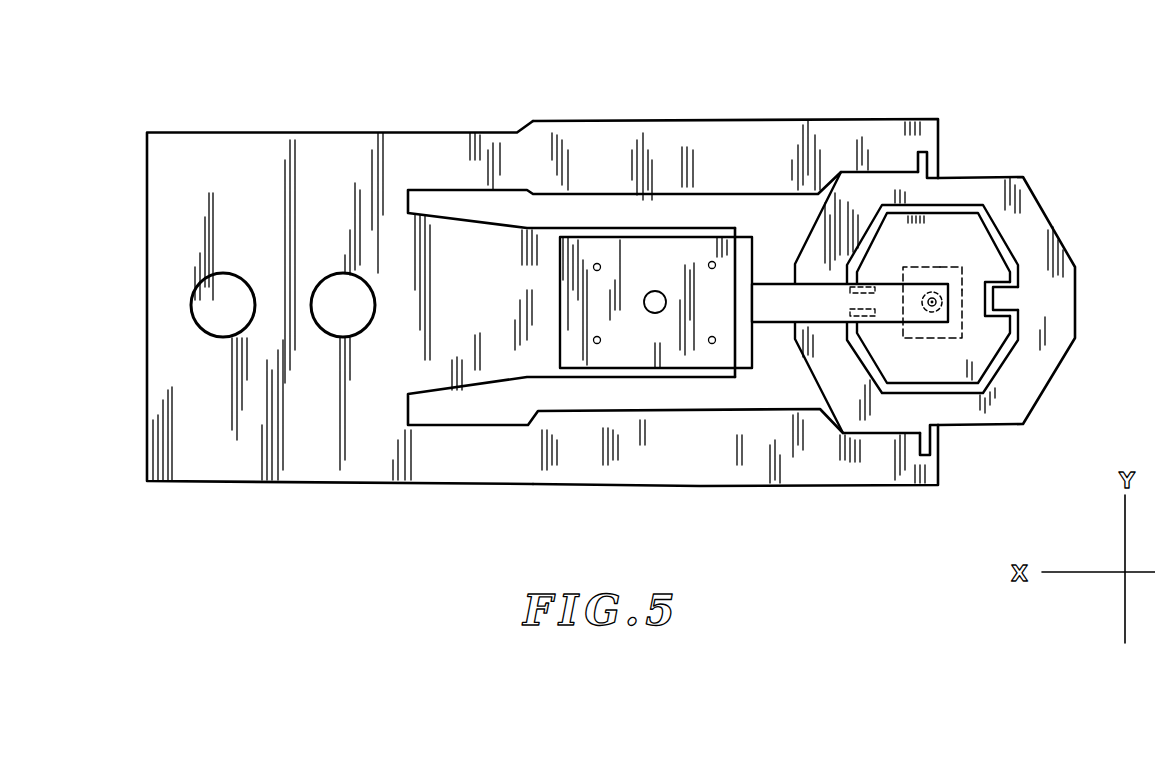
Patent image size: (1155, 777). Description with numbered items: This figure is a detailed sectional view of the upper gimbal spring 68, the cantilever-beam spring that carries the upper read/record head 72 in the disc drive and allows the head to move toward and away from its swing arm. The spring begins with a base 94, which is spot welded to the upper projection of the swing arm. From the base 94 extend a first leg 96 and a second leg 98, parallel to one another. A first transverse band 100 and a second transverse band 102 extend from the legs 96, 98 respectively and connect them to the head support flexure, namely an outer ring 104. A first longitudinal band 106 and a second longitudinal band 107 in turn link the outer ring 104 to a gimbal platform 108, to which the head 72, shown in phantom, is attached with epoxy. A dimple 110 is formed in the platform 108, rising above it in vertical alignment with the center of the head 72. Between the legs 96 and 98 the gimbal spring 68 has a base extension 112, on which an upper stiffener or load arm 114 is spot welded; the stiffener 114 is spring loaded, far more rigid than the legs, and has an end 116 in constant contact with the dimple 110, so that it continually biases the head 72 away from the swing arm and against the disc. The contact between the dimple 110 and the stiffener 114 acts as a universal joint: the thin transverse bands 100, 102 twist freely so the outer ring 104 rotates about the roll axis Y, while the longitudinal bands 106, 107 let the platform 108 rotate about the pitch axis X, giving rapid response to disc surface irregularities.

The upper gimbal spring 68 is at (611, 286).
The upper read/record head 72 is at (957, 266).
The base 94 is at (185, 192).
The first leg 96 is at (653, 132).
The second leg 98 is at (686, 488).
The first transverse band 100 is at (937, 160).
The second transverse band 102 is at (940, 446).
The outer ring 104 is at (1030, 380).
The first longitudinal band 106 is at (1000, 300).
The second longitudinal band 107 is at (848, 298).
The gimbal platform 108 is at (988, 257).
The dimple 110 is at (932, 300).
The base extension 112 is at (505, 318).
The upper stiffener or load arm 114 is at (770, 283).
The end of stiffener 116 is at (929, 311).